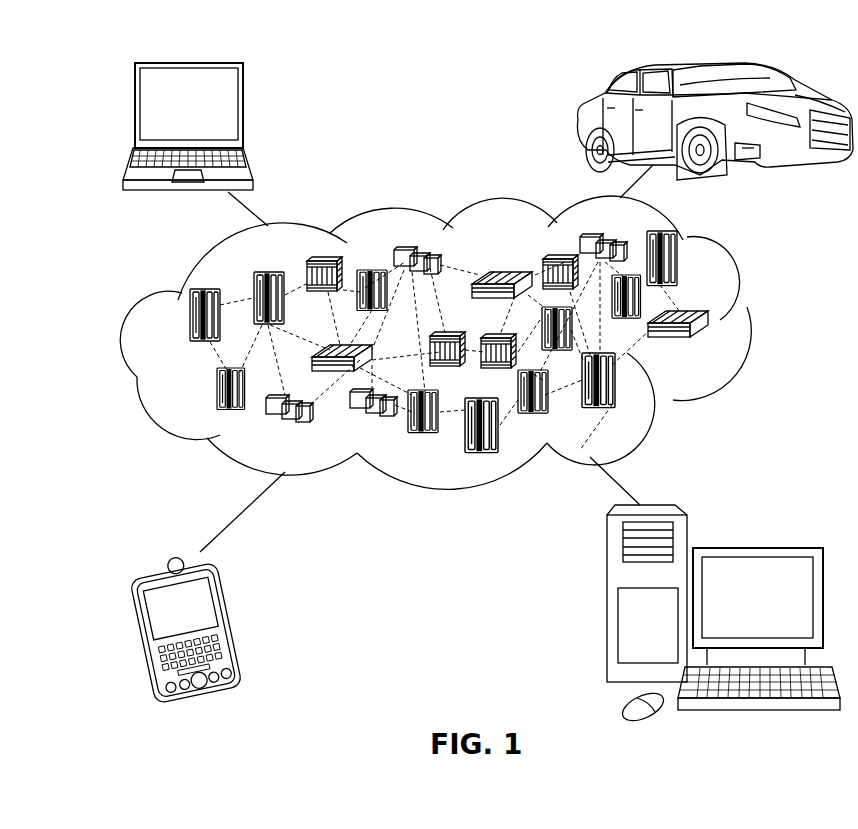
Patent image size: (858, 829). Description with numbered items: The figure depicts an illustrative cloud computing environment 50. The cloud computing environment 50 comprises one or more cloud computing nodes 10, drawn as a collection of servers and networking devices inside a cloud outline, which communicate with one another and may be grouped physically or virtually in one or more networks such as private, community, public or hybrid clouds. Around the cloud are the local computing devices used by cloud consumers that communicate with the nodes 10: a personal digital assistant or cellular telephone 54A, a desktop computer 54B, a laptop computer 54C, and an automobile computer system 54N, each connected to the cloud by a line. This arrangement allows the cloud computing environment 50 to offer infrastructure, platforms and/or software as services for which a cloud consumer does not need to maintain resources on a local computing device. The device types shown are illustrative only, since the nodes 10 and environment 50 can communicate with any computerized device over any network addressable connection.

The cloud computing nodes 10 is at (720, 349).
The cloud computing environment 50 is at (755, 320).
The personal digital assistant or cellular telephone 54A is at (233, 623).
The desktop computer 54B is at (755, 547).
The laptop computer 54C is at (244, 113).
The automobile computer system 54N is at (583, 123).